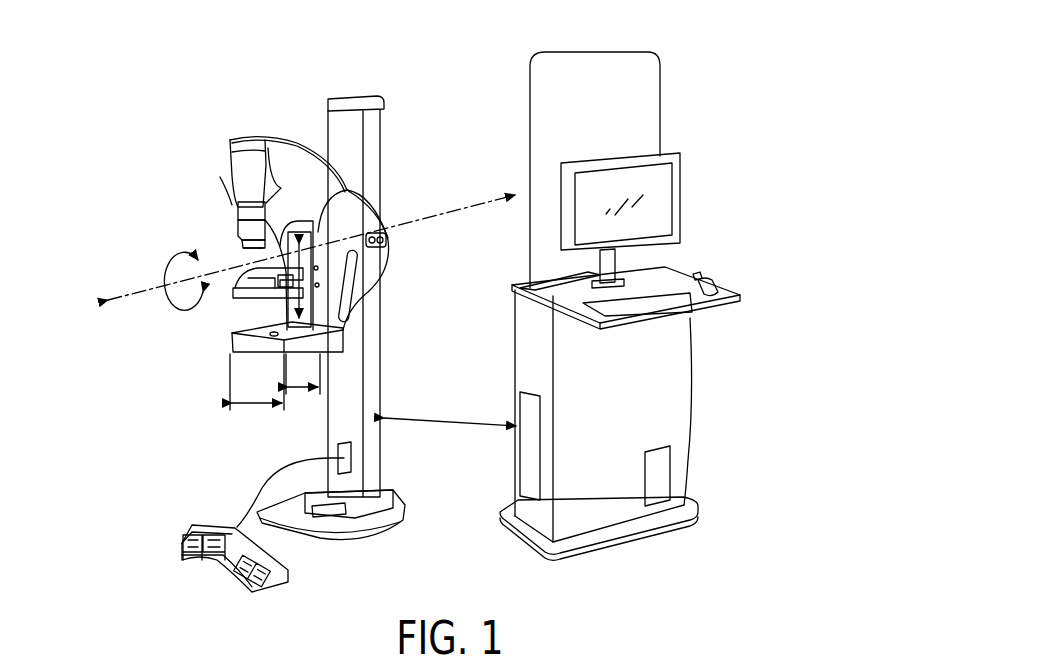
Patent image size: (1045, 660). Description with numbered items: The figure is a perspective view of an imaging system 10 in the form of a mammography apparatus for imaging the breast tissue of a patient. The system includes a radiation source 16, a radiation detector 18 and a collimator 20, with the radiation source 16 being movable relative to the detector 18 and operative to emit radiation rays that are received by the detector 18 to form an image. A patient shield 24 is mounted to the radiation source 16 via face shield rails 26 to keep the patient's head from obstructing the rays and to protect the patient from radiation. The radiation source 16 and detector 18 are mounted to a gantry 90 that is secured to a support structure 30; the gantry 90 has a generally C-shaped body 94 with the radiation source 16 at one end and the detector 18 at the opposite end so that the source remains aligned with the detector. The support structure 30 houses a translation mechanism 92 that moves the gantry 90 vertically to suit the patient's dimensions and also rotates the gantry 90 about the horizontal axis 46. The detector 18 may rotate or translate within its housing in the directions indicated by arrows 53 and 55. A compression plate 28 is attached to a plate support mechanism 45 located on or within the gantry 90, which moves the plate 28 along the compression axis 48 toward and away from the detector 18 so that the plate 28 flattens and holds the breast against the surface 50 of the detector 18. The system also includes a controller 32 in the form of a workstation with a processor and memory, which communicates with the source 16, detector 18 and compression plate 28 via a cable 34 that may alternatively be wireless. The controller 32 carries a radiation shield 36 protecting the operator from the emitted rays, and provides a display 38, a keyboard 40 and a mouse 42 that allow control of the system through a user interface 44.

The imaging system 10 is at (268, 86).
The support structure 30 is at (377, 115).
The C-shaped body 94 is at (243, 157).
The gantry 90 is at (219, 146).
The radiation source 16 is at (238, 198).
The face shield rails 26 is at (245, 214).
The collimator 20 is at (240, 231).
The patient shield 24 is at (262, 248).
The compression axis 48 is at (318, 312).
The compression plate 28 is at (237, 294).
The surface 50 is at (250, 333).
The radiation detector 18 is at (240, 351).
The arrow 53 is at (256, 405).
The arrow 55 is at (312, 392).
The plate support mechanism 45 is at (392, 243).
The axis 46 is at (140, 298).
The translation mechanism 92 is at (385, 219).
The cable 34 is at (486, 426).
The controller 32 is at (686, 67).
The radiation shield 36 is at (642, 106).
The display 38 is at (684, 178).
The user interface 44 is at (660, 211).
The keyboard 40 is at (636, 312).
The mouse 42 is at (712, 286).